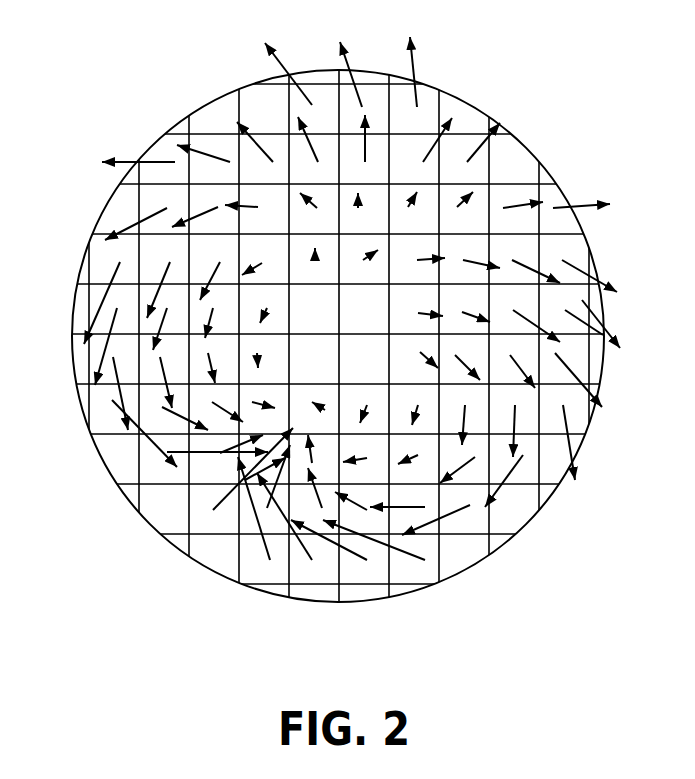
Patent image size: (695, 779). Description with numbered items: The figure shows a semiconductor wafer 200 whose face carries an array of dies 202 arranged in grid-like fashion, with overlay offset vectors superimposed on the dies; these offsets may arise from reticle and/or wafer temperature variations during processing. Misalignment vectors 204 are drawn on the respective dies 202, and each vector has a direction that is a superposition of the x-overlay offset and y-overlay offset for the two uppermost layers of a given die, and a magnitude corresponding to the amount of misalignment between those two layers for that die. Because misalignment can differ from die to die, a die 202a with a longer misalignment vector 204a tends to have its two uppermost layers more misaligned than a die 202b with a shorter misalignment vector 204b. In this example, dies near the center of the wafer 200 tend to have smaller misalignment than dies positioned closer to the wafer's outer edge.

The semiconductor wafer 200 is at (357, 668).
The die 202 is at (323, 302).
The die 202a is at (297, 105).
The die 202b is at (370, 242).
The misalignment vector 204 is at (415, 73).
The misalignment vector 204a is at (282, 62).
The misalignment vector 204b is at (363, 260).